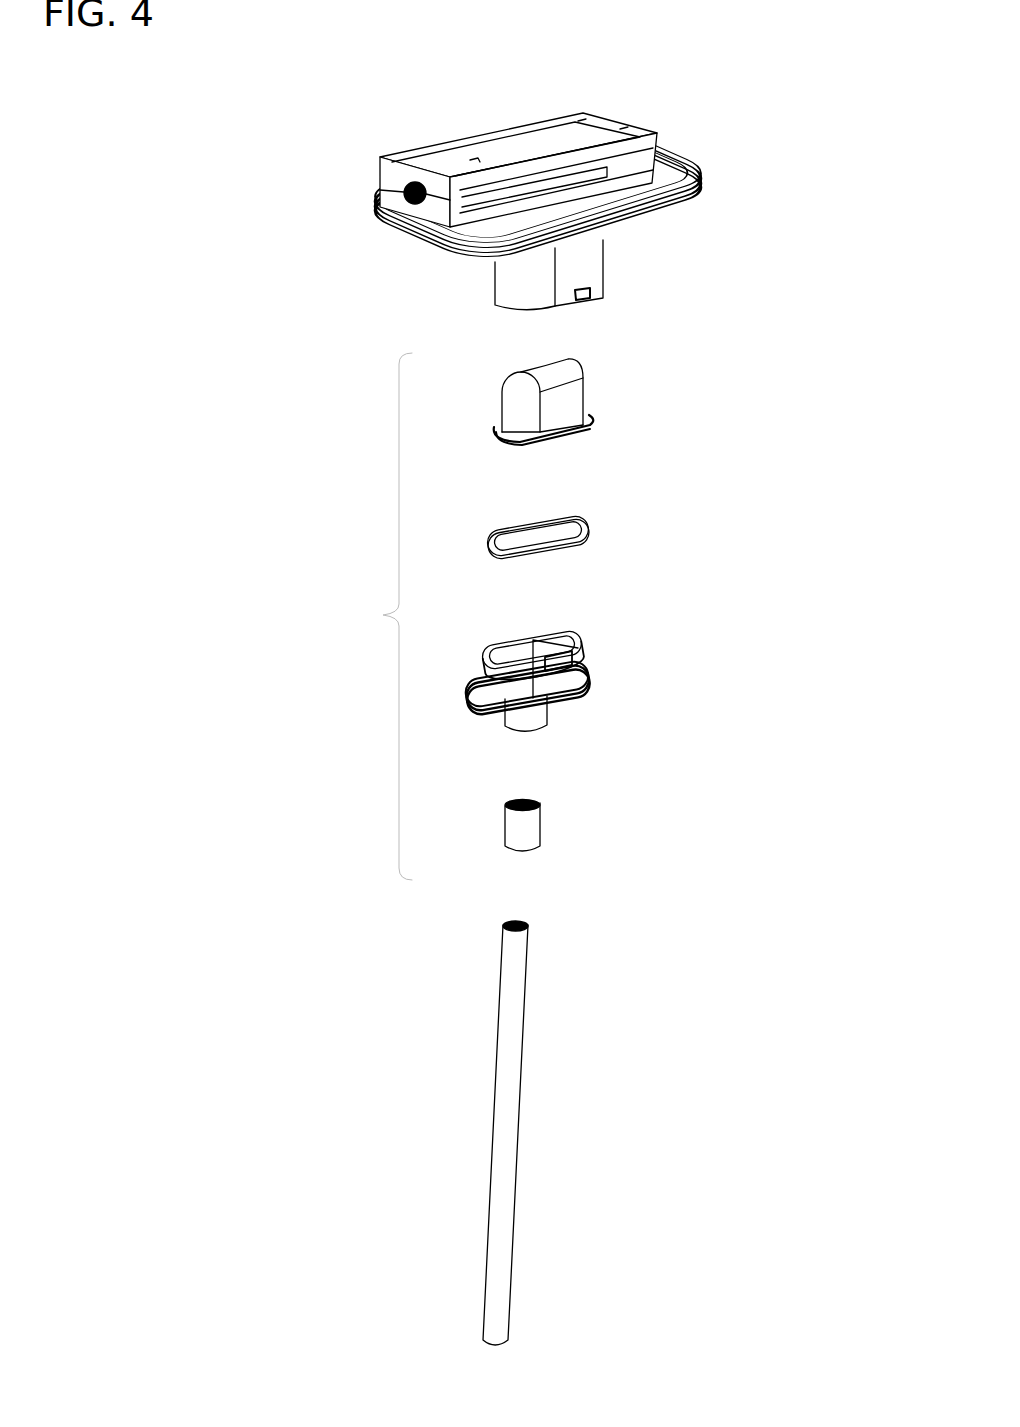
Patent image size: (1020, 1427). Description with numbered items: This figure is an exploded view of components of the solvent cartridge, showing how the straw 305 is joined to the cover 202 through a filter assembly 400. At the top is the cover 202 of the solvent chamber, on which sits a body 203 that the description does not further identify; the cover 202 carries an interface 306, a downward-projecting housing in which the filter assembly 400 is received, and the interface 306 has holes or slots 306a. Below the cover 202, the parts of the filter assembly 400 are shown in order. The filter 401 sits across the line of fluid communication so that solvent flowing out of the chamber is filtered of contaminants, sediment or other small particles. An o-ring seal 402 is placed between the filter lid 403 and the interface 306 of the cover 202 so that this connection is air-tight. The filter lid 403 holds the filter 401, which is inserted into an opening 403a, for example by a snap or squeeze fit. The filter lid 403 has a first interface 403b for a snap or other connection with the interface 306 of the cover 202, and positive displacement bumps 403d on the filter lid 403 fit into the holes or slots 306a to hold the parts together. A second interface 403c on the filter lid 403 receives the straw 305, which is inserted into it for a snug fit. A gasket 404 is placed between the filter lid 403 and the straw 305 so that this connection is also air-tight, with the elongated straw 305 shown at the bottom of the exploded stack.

The cover 202 is at (677, 163).
The housing box 203 is at (500, 150).
The interface 306 is at (600, 290).
The holes or slots 306a is at (588, 302).
The filter assembly 400 is at (349, 616).
The filter 401 is at (595, 410).
The o-ring seal 402 is at (590, 535).
The filter lid 403 is at (606, 681).
The opening 403a is at (522, 648).
The first interface 403b is at (476, 696).
The second interface 403c is at (540, 708).
The positive displacement bumps 403d is at (574, 668).
The gasket 404 is at (548, 832).
The straw 305 is at (505, 1105).